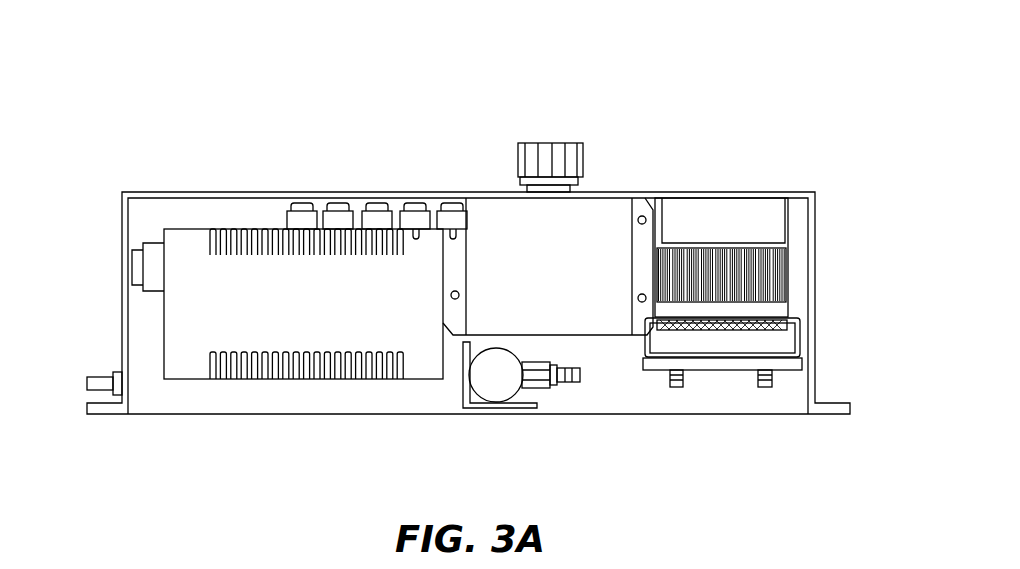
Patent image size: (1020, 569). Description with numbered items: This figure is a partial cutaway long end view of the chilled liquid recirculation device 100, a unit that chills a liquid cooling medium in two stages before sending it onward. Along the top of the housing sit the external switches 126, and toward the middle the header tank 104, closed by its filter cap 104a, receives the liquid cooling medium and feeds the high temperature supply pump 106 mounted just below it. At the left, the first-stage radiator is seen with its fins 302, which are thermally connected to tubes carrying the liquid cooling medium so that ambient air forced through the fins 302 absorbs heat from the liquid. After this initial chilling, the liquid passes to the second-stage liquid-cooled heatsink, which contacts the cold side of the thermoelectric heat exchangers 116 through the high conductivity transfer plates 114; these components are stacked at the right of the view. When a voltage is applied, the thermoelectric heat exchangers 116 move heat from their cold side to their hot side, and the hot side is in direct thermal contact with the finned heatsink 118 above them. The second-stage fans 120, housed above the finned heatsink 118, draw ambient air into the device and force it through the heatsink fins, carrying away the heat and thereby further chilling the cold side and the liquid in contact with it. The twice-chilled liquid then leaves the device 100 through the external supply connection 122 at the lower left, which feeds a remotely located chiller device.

The chilled liquid recirculation device 100 is at (113, 77).
The fins 302 is at (243, 243).
The external switches 126 is at (305, 205).
The filter cap 104a is at (538, 167).
The header tank 104 is at (598, 242).
The second-stage fans 120 is at (690, 217).
The finned heatsink 118 is at (757, 280).
The thermoelectric heat exchangers 116 is at (745, 327).
The high conductivity transfer plates 114 is at (730, 333).
The high temperature supply pump 106 is at (495, 377).
The external supply connection 122 is at (102, 380).